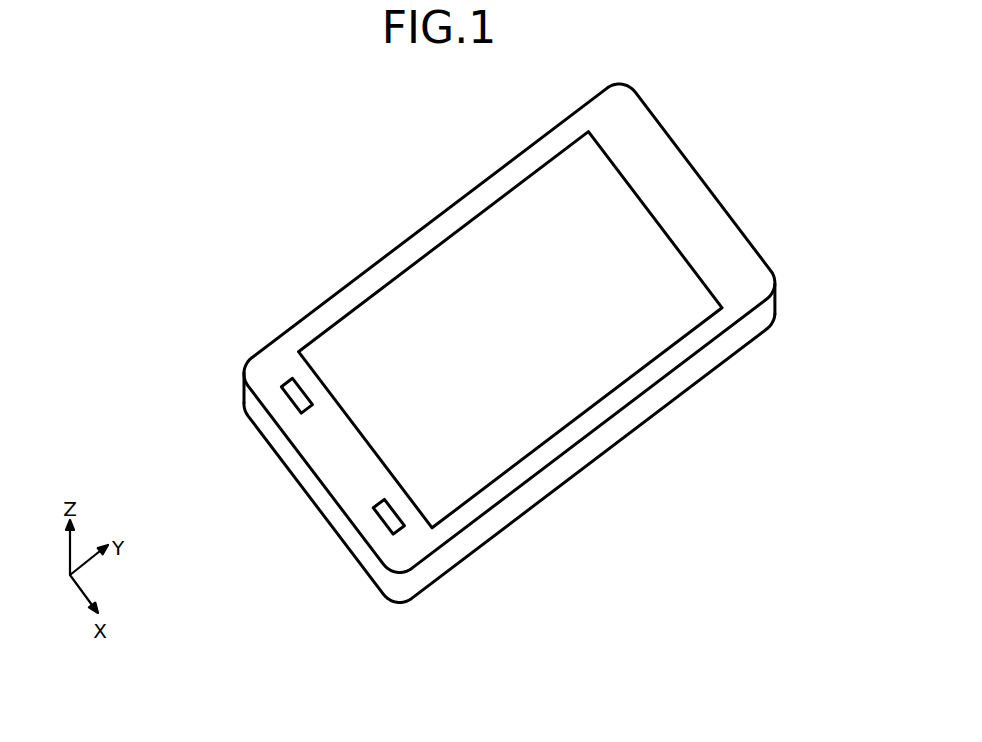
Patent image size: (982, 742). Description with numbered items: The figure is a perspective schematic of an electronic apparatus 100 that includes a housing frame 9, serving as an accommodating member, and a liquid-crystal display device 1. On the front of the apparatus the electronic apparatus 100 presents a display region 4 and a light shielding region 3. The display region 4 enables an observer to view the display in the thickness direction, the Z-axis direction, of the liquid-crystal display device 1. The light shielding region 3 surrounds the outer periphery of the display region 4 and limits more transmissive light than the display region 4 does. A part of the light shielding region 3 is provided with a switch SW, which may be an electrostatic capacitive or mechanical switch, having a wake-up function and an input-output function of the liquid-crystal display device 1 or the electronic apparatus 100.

The electronic apparatus 100 is at (777, 145).
The liquid-crystal display device 1 is at (497, 252).
The display region 4 is at (413, 300).
The light shielding region 3 is at (340, 472).
The housing frame 9 is at (377, 575).
The switch SW is at (291, 397).